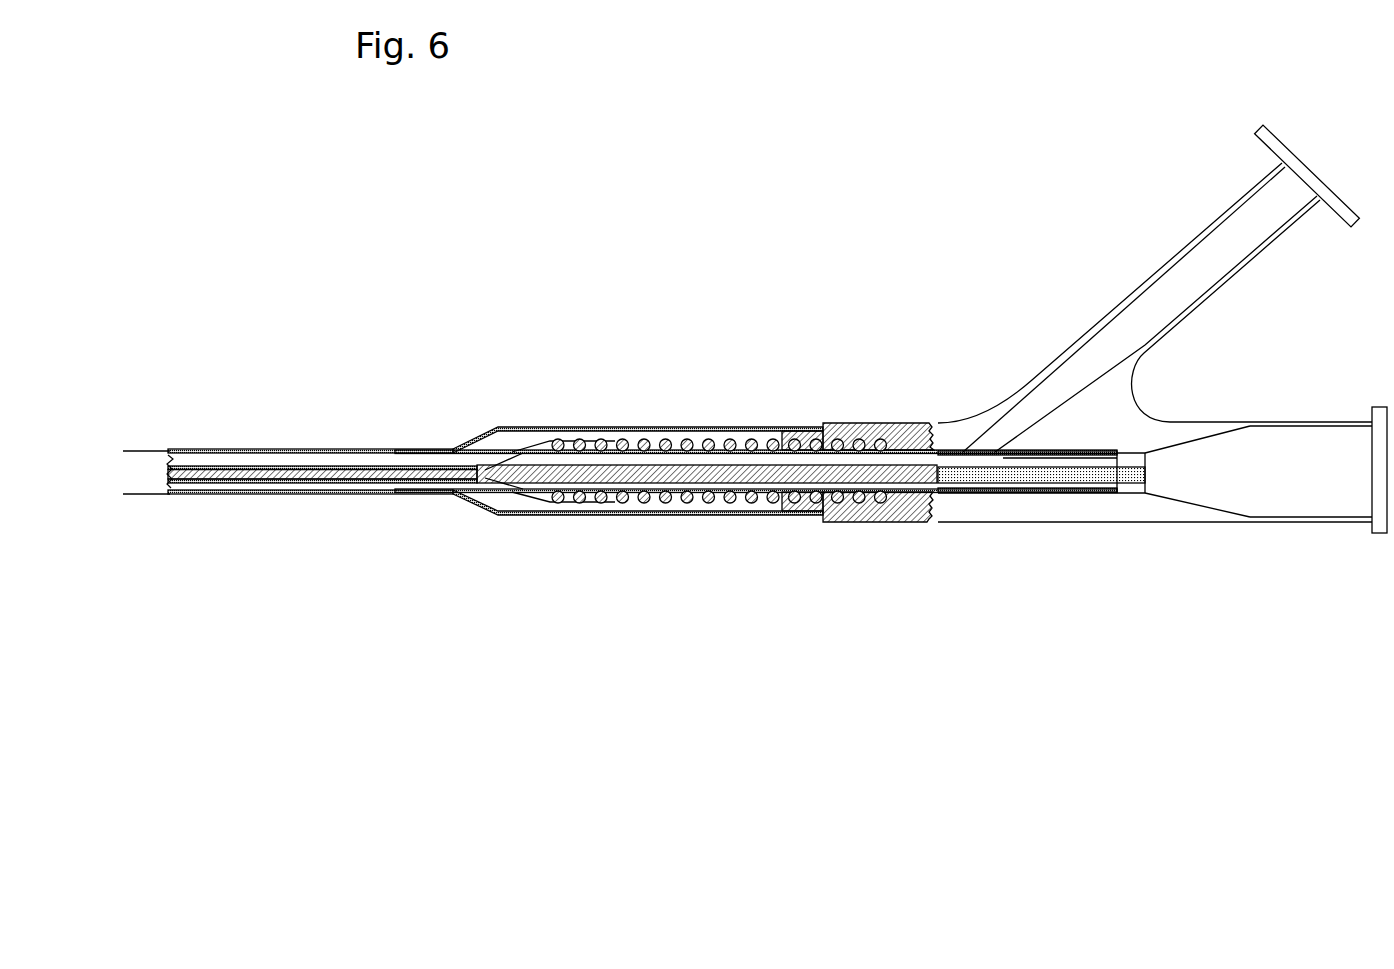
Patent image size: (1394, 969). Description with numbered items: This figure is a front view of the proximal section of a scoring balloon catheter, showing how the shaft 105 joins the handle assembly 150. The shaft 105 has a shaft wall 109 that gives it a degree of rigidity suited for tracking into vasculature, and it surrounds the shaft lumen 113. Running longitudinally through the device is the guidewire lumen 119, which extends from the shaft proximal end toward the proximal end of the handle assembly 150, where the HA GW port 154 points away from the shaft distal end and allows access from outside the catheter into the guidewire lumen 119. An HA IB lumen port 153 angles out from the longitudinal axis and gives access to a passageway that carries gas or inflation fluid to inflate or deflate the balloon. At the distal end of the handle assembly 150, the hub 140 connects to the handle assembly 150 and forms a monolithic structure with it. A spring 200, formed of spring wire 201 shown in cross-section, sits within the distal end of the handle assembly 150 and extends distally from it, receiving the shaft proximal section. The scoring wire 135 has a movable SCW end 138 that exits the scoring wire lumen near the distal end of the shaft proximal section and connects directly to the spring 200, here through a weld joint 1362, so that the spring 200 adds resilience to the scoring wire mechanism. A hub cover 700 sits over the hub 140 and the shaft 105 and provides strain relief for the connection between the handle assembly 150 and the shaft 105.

The shaft 105 is at (160, 417).
The shaft wall 109 is at (268, 450).
The shaft lumen 113 is at (535, 435).
The guidewire lumen 119 is at (1090, 480).
The scoring wire 135 is at (405, 455).
The movable SCW end 138 is at (613, 437).
The hub 140 is at (843, 518).
The handle assembly 150 is at (965, 312).
The HA IB lumen port 153 is at (1318, 160).
The HA GW port 154 is at (1295, 483).
The spring 200 is at (637, 502).
The spring wire 201 is at (705, 498).
The hub cover 700 is at (507, 516).
The weld joint 1362 is at (603, 508).